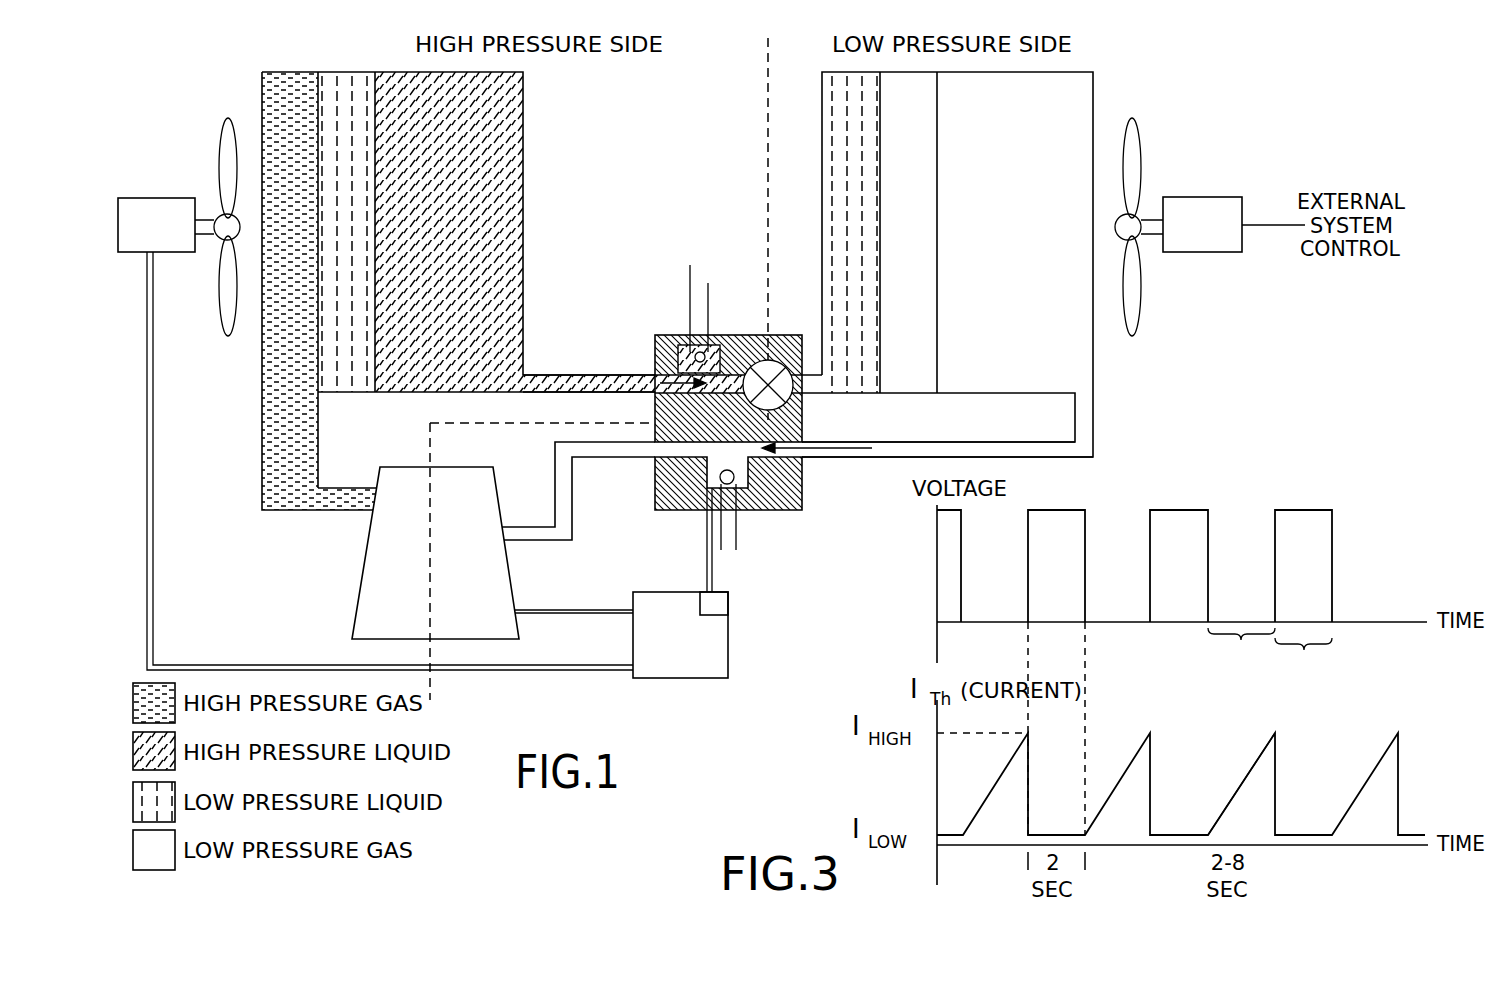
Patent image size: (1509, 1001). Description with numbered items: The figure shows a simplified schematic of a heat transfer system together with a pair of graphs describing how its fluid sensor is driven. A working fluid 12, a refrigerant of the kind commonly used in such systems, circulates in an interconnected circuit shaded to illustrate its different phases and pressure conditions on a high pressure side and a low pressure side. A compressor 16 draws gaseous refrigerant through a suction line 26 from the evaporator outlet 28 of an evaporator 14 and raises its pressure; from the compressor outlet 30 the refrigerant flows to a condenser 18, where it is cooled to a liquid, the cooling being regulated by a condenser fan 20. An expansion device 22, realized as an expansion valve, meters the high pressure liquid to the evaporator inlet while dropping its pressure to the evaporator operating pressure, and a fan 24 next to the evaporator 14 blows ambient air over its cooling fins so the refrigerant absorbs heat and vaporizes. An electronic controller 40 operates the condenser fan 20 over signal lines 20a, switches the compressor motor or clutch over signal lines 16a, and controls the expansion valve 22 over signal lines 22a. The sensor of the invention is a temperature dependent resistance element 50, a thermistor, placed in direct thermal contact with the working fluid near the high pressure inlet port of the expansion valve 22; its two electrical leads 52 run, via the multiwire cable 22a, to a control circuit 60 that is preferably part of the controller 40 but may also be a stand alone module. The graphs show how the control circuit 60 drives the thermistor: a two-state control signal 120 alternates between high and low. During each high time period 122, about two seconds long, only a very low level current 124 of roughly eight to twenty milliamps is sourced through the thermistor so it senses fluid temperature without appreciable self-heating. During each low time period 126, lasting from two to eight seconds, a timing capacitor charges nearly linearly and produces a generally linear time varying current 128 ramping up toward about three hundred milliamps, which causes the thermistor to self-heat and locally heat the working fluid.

In FIG. 1, the working fluid 12 is at (560, 380).
In FIG. 1, the evaporator 14 is at (1103, 80).
In FIG. 1, the compressor 16 is at (362, 549).
In FIG. 1, the signal lines 16a is at (565, 605).
In FIG. 1, the condenser 18 is at (348, 68).
In FIG. 1, the condenser fan 20 is at (156, 192).
In FIG. 1, the signal lines 20a is at (535, 673).
In FIG. 1, the expansion device 22 is at (750, 330).
In FIG. 1, the signal lines 22a is at (714, 570).
In FIG. 1, the fan 24 is at (1205, 197).
In FIG. 1, the suction line 26 is at (572, 485).
In FIG. 1, the evaporator outlet 28 is at (1083, 395).
In FIG. 1, the compressor outlet 30 is at (376, 488).
In FIG. 1, the electronic controller 40 is at (680, 635).
In FIG. 1, the temperature dependent resistance element 50 is at (675, 348).
In FIG. 1, the electrical leads 52 is at (705, 283).
In FIG. 1, the control circuit 60 is at (713, 604).
In FIG. 3, the control signal 120 is at (1180, 480).
In FIG. 3, the time period 122 is at (1303, 657).
In FIG. 3, the low level current 124 is at (1288, 835).
In FIG. 3, the time period 126 is at (1241, 647).
In FIG. 3, the time varying current 128 is at (1237, 791).